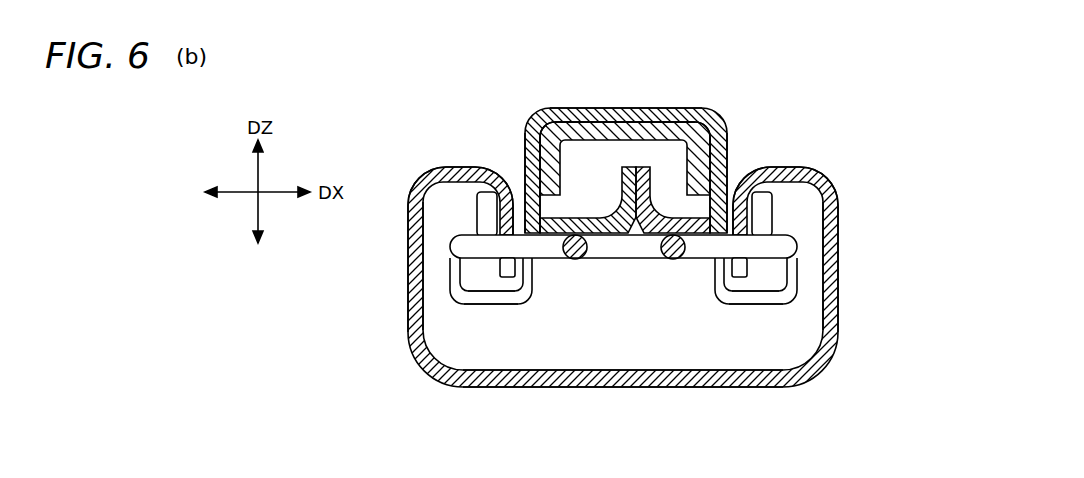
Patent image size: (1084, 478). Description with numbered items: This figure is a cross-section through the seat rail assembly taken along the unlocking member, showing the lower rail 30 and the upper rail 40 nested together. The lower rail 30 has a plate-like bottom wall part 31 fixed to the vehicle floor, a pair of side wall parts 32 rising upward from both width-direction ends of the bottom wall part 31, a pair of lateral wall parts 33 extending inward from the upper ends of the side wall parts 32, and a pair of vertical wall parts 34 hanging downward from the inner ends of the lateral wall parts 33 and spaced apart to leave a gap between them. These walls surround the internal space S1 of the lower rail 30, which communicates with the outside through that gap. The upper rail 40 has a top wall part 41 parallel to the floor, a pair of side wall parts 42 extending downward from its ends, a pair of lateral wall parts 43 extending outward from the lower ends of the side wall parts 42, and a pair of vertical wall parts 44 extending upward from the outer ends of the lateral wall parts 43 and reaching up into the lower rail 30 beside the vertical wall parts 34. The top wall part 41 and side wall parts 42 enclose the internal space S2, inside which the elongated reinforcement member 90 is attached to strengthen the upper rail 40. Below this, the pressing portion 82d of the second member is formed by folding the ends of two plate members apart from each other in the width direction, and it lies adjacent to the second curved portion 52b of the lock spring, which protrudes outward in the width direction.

The lower rail 30 is at (790, 388).
The bottom wall part 31 is at (580, 388).
The side wall part 32 is at (410, 321).
The lateral wall part 33 is at (476, 165).
The vertical wall part 34 is at (484, 270).
The upper rail 40 is at (705, 108).
The top wall part 41 is at (657, 107).
The side wall part 42 is at (525, 150).
The lateral wall part 43 is at (490, 306).
The vertical wall part 44 is at (477, 228).
The second curved portion 52b is at (547, 259).
The pressing portion 82d is at (612, 233).
The reinforcement member 90 is at (587, 141).
The internal space S1 is at (600, 339).
The internal space S2 is at (648, 152).